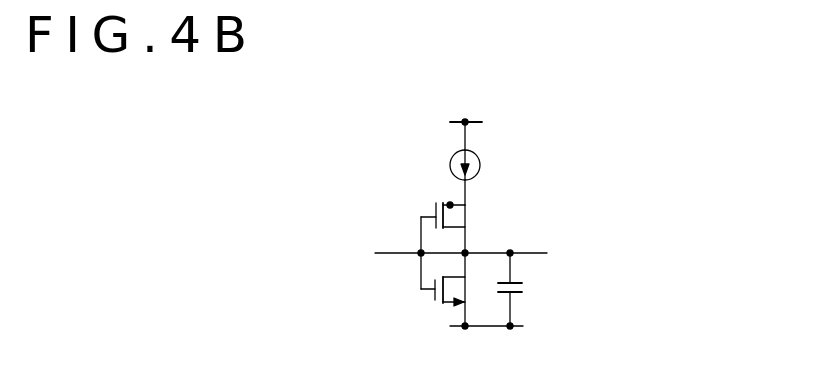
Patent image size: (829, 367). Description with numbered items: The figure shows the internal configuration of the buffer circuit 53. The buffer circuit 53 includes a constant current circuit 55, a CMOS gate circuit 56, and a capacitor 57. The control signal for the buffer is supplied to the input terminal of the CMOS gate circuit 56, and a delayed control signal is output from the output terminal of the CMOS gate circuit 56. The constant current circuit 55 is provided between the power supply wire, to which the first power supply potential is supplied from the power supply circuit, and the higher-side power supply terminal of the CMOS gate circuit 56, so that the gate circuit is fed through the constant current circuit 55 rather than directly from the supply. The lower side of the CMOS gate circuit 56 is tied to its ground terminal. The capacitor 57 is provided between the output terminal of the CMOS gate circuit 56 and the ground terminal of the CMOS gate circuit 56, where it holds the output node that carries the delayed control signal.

The buffer circuit 53 is at (583, 104).
The constant current circuit 55 is at (482, 166).
The CMOS gate circuit 56 is at (430, 208).
The capacitor 57 is at (515, 295).